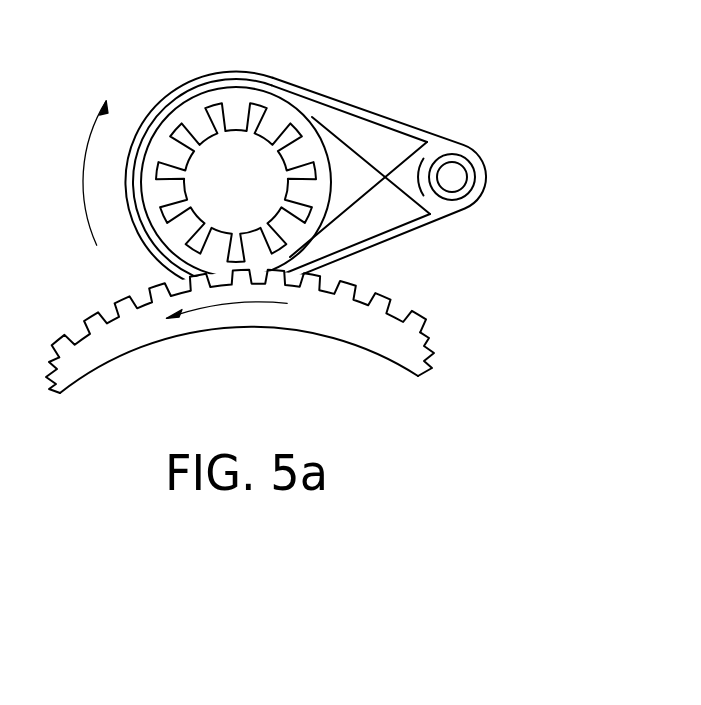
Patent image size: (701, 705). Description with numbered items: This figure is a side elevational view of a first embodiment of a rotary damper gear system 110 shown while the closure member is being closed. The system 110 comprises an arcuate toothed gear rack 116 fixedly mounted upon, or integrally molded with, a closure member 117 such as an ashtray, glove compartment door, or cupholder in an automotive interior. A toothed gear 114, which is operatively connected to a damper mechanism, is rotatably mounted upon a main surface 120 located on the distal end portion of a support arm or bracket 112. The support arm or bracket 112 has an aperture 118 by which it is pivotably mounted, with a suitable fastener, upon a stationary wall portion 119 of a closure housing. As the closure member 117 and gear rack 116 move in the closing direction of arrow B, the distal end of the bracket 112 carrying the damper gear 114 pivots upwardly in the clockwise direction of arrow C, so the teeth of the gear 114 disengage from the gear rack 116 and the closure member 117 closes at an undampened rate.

The rotary damper gear system 110 is at (325, 211).
The support arm or bracket 112 is at (373, 112).
The toothed gear 114 is at (249, 155).
The toothed gear rack 116 is at (240, 340).
The closure member 117 is at (252, 381).
The aperture 118 is at (458, 183).
The stationary wall portion 119 is at (470, 267).
The main surface 120 is at (240, 103).